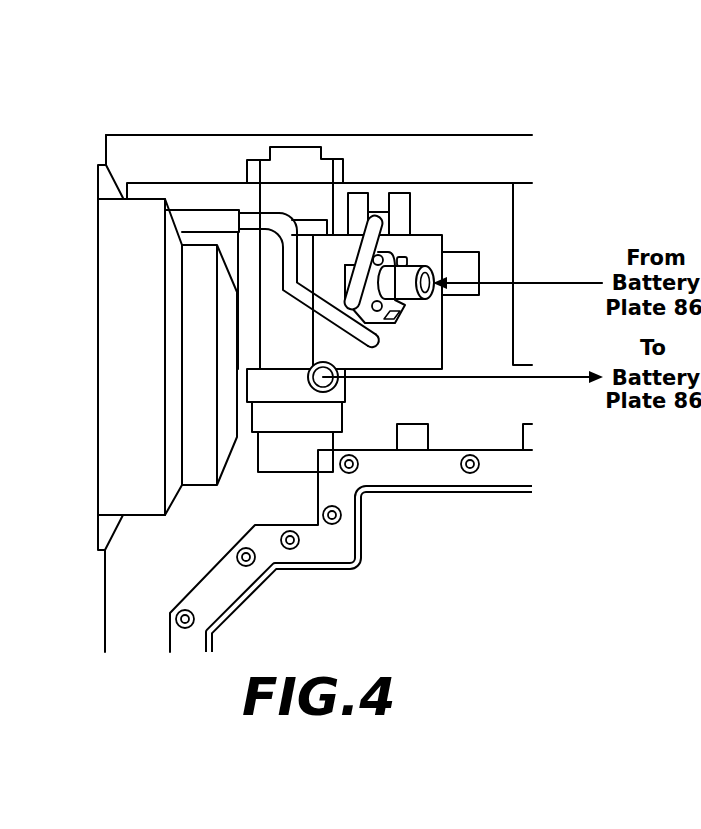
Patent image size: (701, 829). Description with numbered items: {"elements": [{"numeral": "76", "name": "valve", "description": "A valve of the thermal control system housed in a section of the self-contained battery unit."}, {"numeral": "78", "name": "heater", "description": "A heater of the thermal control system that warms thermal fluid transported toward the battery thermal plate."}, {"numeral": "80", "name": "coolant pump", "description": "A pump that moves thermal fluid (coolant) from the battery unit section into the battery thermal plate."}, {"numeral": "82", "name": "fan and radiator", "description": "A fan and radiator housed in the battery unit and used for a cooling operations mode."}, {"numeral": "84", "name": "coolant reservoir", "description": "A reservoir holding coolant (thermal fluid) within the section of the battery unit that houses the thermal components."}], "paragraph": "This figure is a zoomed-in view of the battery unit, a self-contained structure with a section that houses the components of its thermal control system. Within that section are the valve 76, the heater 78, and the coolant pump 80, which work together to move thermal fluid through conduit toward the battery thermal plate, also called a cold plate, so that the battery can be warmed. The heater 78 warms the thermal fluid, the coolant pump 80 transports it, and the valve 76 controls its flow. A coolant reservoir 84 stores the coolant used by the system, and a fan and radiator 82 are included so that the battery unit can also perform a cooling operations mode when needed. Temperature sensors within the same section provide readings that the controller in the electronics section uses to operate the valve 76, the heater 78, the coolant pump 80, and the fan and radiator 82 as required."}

The connector terminal 76 is at (388, 303).
The switch assembly 78 is at (433, 243).
The terminal bracket 80 is at (320, 418).
The housing wall 82 is at (117, 255).
The mounting block 84 is at (270, 168).